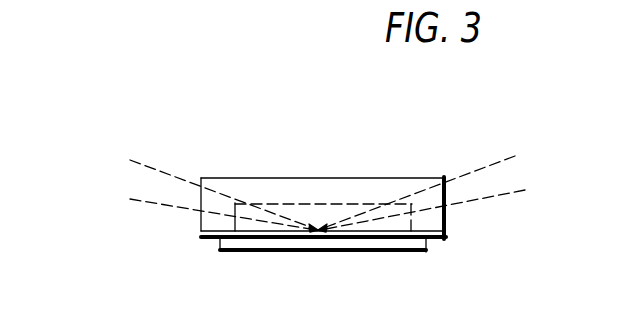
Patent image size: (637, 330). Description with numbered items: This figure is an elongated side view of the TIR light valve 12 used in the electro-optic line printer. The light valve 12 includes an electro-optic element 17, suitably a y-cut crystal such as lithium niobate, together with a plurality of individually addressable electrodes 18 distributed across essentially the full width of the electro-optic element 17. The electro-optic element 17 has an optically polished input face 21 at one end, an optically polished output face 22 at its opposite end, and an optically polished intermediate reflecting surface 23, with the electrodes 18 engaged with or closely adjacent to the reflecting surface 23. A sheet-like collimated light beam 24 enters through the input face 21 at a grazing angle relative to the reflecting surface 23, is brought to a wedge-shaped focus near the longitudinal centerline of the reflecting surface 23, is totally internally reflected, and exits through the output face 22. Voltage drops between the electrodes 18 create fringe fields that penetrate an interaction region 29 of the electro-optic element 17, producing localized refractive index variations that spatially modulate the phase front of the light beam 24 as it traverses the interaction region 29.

The light valve 12 is at (304, 154).
The electro-optic element 17 is at (271, 190).
The electrodes 18 is at (275, 242).
The input face 21 is at (202, 220).
The output face 22 is at (448, 223).
The reflecting surface 23 is at (427, 239).
The light beam 24 is at (162, 190).
The interaction region 29 is at (348, 205).